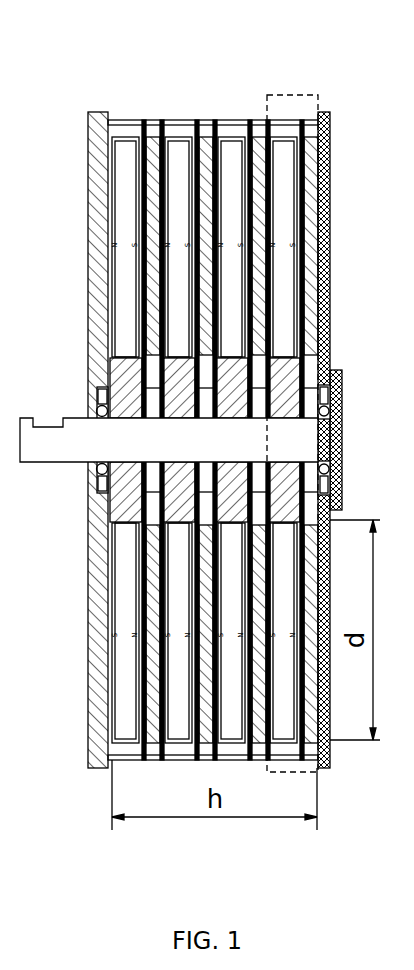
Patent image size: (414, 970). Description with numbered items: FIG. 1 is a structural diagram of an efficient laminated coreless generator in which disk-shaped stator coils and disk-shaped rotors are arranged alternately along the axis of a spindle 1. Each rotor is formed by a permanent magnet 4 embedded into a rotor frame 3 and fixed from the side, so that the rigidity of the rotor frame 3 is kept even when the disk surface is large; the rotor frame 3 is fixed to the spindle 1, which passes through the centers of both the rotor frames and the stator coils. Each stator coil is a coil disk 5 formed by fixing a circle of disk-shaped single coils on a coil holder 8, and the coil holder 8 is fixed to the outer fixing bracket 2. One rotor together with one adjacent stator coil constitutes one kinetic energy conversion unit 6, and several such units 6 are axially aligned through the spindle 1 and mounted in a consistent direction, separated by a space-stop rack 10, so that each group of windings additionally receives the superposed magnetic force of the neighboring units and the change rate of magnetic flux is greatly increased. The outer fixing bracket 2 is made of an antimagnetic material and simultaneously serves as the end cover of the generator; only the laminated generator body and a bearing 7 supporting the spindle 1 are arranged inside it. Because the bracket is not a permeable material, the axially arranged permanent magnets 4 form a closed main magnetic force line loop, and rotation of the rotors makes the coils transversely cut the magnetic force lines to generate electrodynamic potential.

The spindle 1 is at (50, 440).
The outer fixing bracket 2 is at (327, 143).
The rotor frame 3 is at (182, 157).
The permanent magnet 4 is at (167, 140).
The coil disk 5 is at (207, 148).
The kinetic energy conversion unit 6 is at (290, 95).
The bearing 7 is at (323, 398).
The coil holder 8 is at (252, 130).
The space-stop rack 10 is at (143, 153).